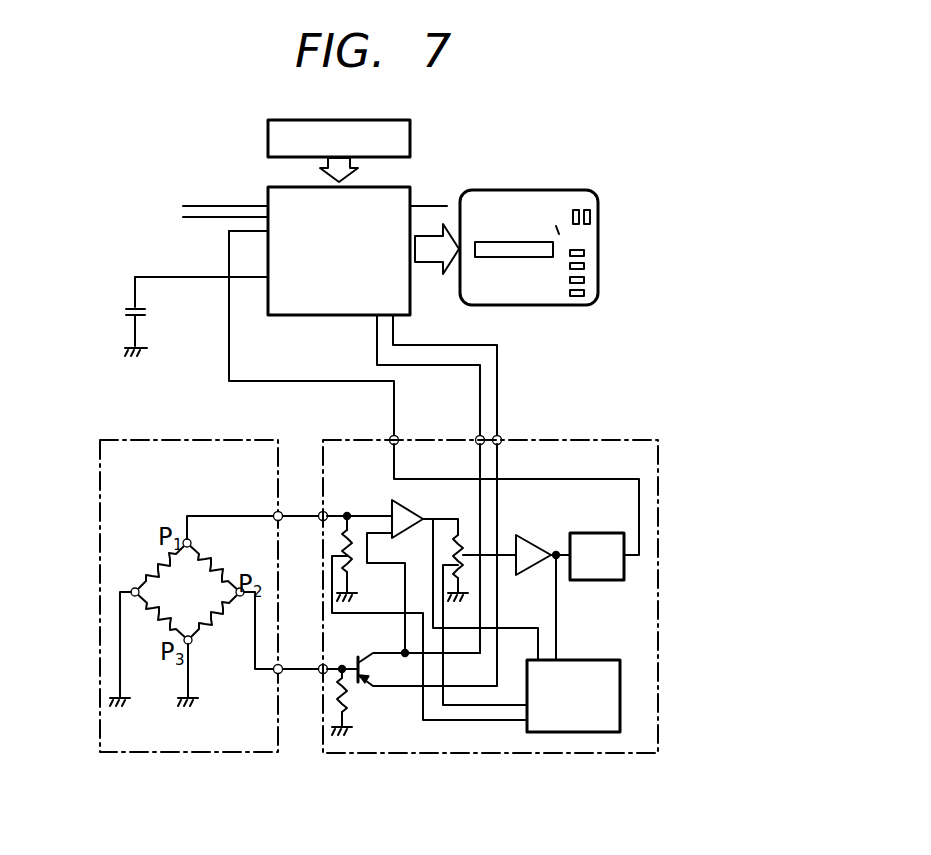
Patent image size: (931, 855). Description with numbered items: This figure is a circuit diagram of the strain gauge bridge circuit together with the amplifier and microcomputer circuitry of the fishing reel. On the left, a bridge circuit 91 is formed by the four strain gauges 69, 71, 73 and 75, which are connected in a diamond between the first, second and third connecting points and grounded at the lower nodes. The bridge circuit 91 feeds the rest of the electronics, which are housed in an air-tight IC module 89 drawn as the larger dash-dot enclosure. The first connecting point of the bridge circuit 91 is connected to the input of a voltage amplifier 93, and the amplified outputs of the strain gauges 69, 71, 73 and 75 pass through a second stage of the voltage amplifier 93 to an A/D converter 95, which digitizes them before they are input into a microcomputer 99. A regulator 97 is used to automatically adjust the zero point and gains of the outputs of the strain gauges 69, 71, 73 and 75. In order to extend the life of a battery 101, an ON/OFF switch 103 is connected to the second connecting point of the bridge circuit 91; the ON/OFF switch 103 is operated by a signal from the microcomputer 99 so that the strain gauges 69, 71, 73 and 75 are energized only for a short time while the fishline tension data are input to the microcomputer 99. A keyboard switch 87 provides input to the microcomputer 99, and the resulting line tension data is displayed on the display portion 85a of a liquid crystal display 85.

The strain gauge 69 is at (157, 567).
The strain gauge 71 is at (212, 560).
The strain gauge 73 is at (213, 623).
The strain gauge 75 is at (162, 626).
The liquid crystal display 85 is at (520, 200).
The display portion 85a is at (548, 212).
The keyboard switch 87 is at (413, 140).
The IC module 89 is at (413, 757).
The bridge circuit 91 is at (255, 755).
The voltage amplifier 93 is at (392, 507).
The A/D converter 95 is at (600, 582).
The regulator 97 is at (572, 733).
The microcomputer 99 is at (268, 188).
The battery 101 is at (130, 305).
The ON/OFF switch 103 is at (356, 695).